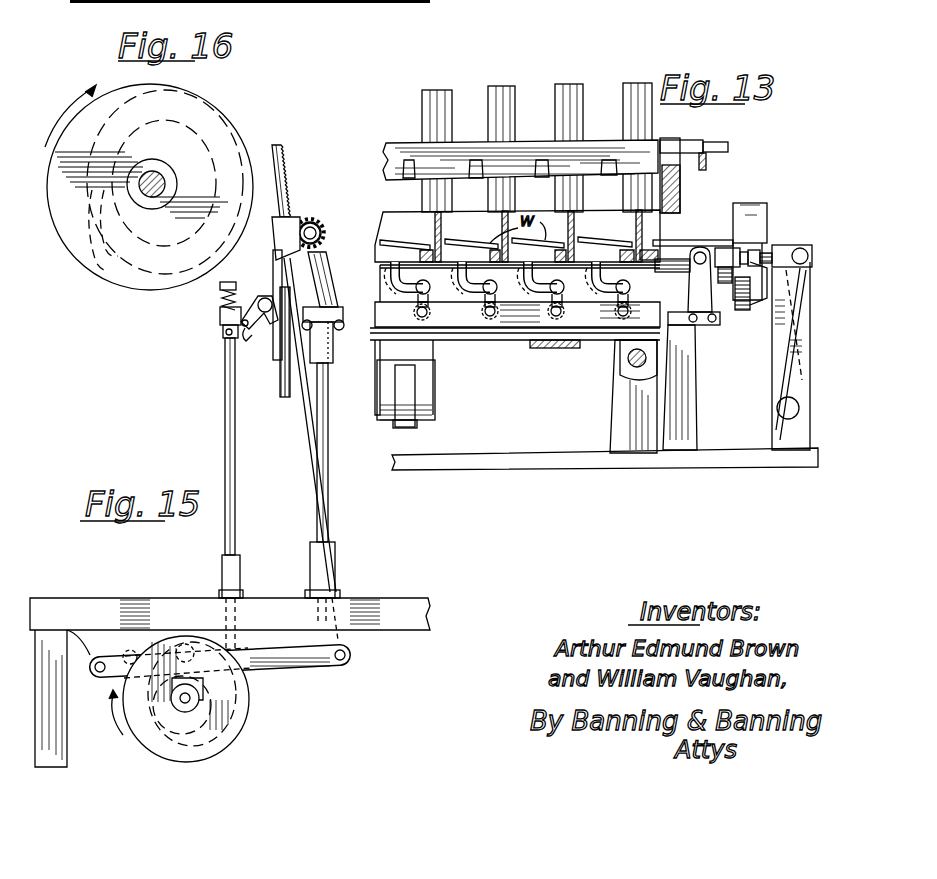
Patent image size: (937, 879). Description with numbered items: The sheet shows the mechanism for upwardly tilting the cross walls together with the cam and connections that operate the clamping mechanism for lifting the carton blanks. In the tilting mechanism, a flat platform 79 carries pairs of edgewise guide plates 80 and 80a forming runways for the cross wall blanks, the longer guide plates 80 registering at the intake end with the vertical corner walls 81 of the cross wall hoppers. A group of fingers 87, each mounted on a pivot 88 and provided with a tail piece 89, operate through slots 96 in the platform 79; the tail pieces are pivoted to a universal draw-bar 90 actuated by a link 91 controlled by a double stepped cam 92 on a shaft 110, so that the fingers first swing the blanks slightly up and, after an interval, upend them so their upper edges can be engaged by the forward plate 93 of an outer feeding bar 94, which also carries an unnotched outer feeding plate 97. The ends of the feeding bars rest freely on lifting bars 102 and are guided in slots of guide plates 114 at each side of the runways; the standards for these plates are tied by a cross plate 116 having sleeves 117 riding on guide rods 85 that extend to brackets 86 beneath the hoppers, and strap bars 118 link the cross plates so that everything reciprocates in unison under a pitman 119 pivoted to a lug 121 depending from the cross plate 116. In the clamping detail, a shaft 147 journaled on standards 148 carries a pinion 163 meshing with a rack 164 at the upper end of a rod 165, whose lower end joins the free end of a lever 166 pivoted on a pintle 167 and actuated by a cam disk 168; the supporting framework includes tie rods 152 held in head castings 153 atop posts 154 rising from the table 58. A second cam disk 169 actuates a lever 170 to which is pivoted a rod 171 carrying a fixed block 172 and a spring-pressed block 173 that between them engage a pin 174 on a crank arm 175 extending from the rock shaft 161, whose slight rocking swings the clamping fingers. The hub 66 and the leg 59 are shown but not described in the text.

In FIG. 16, the shaft 66 is at (158, 176).
In FIG. 16, the cam disk 169 is at (90, 244).
In FIG. 16, the cam disk 168 is at (104, 270).
In FIG. 15, the cam disk 168 is at (142, 746).
In FIG. 15, the rack 164 is at (283, 184).
In FIG. 15, the shaft 147 is at (318, 227).
In FIG. 15, the pinion 163 is at (324, 240).
In FIG. 15, the standards 148 is at (330, 296).
In FIG. 15, the rod 165 is at (308, 427).
In FIG. 15, the tie rods 152 is at (312, 328).
In FIG. 15, the head castings 153 is at (334, 360).
In FIG. 15, the posts 154 is at (328, 409).
In FIG. 15, the spring-pressed block 173 is at (220, 318).
In FIG. 15, the fixed block 172 is at (222, 331).
In FIG. 15, the rod 171 is at (226, 452).
In FIG. 15, the rock shaft 161 is at (270, 292).
In FIG. 15, the crank arm 175 is at (247, 327).
In FIG. 15, the pin 174 is at (246, 342).
In FIG. 15, the table 58 is at (82, 606).
In FIG. 13, the table 58 is at (488, 457).
In FIG. 15, the frame leg 59 is at (60, 733).
In FIG. 15, the lever 166 is at (298, 668).
In FIG. 15, the pintle 167 is at (102, 675).
In FIG. 15, the lever 170 is at (232, 672).
In FIG. 13, the vertical corner walls 81 is at (560, 116).
In FIG. 13, the forward plate 93 is at (585, 150).
In FIG. 13, the outer feeding plate 97 is at (616, 168).
In FIG. 13, the guide plate 80a is at (575, 224).
In FIG. 13, the slots 96 is at (388, 264).
In FIG. 13, the pivot 88 is at (628, 284).
In FIG. 13, the tail piece 89 is at (522, 312).
In FIG. 13, the fingers 87 is at (470, 302).
In FIG. 13, the universal draw-bar 90 is at (398, 315).
In FIG. 13, the platform 79 is at (660, 245).
In FIG. 13, the guide plate 80 is at (650, 250).
In FIG. 13, the guide plates 114 is at (668, 138).
In FIG. 13, the outer feeding bar 94 is at (695, 142).
In FIG. 13, the lifting bars 102 is at (707, 162).
In FIG. 13, the double stepped cam 92 is at (752, 205).
In FIG. 13, the link 91 is at (726, 248).
In FIG. 13, the shaft 110 is at (690, 282).
In FIG. 13, the cross plate 116 is at (450, 340).
In FIG. 13, the lug 121 is at (428, 380).
In FIG. 13, the pitman 119 is at (410, 428).
In FIG. 13, the strap bars 118 is at (540, 348).
In FIG. 13, the sleeves 117 is at (626, 347).
In FIG. 13, the guide rods 85 is at (630, 364).
In FIG. 13, the brackets 86 is at (614, 420).